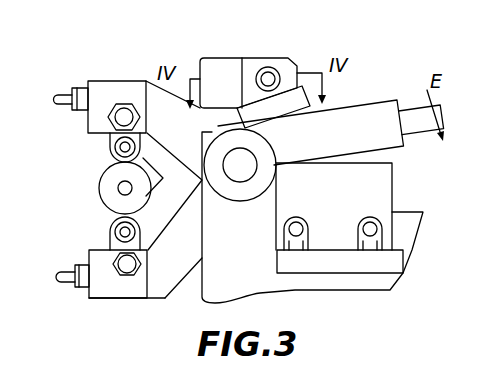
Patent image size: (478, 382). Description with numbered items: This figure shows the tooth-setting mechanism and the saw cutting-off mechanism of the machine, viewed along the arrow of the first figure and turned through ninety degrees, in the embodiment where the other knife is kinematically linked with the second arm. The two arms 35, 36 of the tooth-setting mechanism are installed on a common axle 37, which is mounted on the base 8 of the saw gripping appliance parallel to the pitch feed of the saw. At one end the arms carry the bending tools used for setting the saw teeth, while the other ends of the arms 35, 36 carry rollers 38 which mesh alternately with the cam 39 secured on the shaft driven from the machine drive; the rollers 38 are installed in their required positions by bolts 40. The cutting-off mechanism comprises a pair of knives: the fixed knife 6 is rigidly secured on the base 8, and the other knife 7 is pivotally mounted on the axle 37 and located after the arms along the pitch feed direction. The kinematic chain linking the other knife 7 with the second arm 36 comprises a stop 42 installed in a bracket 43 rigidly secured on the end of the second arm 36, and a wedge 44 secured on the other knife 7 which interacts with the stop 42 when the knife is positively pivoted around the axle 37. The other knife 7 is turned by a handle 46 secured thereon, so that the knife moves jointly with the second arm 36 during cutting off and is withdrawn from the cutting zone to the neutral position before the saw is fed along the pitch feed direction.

The fixed knife 6 is at (370, 197).
The other knife 7 is at (368, 113).
The base 8 is at (215, 281).
The arm 35 is at (100, 260).
The second arm 36 is at (93, 128).
The axle 37 is at (250, 167).
The rollers 38 is at (117, 238).
The cam 39 is at (112, 182).
The bolts 40 is at (64, 93).
The stop 42 is at (290, 75).
The bracket 43 is at (220, 77).
The wedge 44 is at (258, 112).
The handle 46 is at (418, 118).